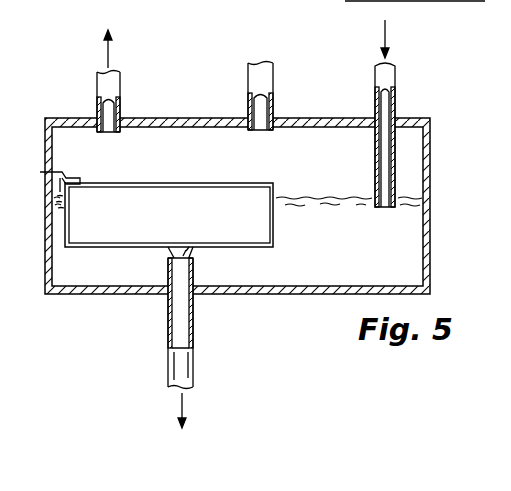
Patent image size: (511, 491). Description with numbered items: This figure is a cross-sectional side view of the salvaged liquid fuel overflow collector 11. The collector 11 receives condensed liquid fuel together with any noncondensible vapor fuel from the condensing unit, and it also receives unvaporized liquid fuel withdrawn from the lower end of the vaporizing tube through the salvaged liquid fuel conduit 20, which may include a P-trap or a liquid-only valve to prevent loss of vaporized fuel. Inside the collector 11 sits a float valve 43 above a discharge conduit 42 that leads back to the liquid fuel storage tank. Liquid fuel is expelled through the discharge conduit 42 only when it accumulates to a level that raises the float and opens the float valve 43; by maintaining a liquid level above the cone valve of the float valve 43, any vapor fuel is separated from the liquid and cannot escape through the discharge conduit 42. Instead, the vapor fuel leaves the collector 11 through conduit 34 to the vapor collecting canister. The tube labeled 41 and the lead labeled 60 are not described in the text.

The liquid fuel overflow collector 11 is at (430, 223).
The salvaged liquid fuel conduit 20 is at (398, 80).
The conduit 34 is at (121, 95).
The vent tube 41 is at (277, 81).
The discharge conduit 42 is at (168, 332).
The float valve 43 is at (250, 227).
The element of adjacent figure 60 is at (415, 0).